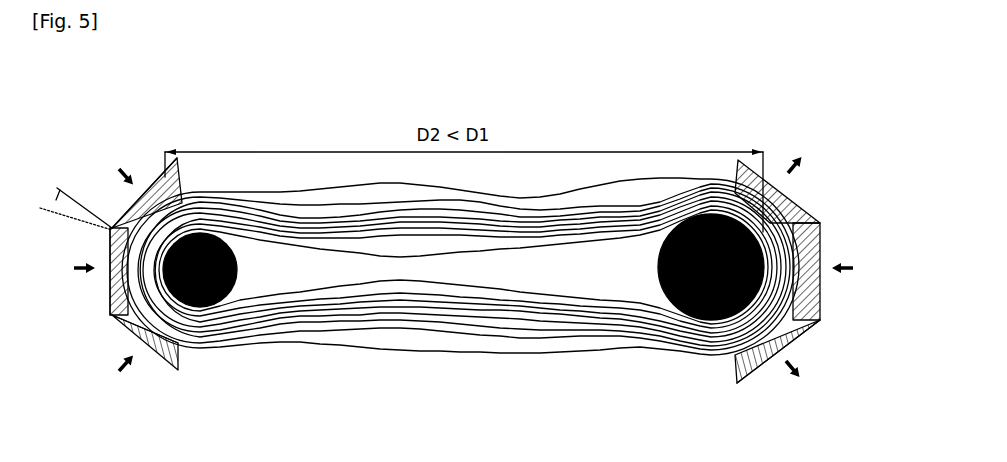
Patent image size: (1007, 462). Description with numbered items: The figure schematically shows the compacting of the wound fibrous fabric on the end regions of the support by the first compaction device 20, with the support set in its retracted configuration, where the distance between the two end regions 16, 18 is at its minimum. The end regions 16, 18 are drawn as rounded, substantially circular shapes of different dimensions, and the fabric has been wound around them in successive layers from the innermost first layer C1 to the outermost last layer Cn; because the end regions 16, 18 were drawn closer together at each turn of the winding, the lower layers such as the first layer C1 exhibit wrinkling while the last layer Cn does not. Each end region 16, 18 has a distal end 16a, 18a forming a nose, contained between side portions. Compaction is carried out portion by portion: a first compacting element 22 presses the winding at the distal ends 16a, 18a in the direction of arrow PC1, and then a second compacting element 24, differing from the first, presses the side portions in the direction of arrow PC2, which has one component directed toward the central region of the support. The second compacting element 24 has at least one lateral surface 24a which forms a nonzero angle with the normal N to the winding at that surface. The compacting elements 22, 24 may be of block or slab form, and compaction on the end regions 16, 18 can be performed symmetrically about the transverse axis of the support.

The end region 16 is at (186, 256).
The distal end 16a is at (110, 313).
The end region 18 is at (766, 257).
The distal end 18a is at (820, 308).
The first compaction device 20 is at (146, 143).
The first compacting element 22 is at (109, 291).
The second compacting element 24 is at (177, 153).
The lateral surface 24a is at (112, 232).
The normal to the winding N is at (57, 186).
The compacting pressure direction PC1 is at (78, 266).
The compacting pressure direction PC2 is at (168, 228).
The last layer Cn is at (392, 186).
The first layer C1 is at (471, 251).